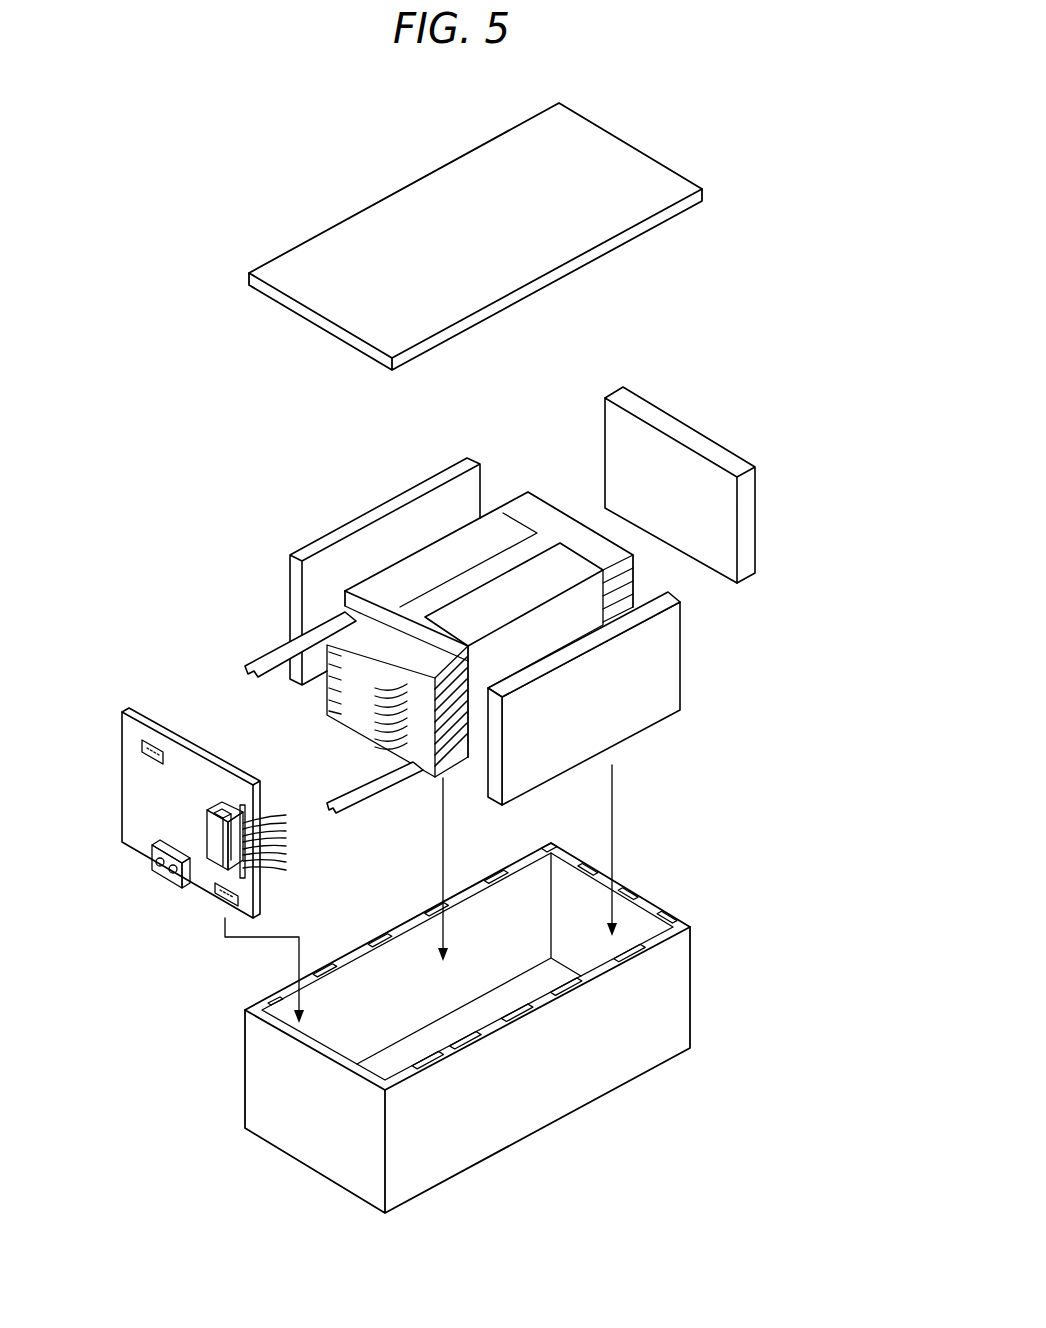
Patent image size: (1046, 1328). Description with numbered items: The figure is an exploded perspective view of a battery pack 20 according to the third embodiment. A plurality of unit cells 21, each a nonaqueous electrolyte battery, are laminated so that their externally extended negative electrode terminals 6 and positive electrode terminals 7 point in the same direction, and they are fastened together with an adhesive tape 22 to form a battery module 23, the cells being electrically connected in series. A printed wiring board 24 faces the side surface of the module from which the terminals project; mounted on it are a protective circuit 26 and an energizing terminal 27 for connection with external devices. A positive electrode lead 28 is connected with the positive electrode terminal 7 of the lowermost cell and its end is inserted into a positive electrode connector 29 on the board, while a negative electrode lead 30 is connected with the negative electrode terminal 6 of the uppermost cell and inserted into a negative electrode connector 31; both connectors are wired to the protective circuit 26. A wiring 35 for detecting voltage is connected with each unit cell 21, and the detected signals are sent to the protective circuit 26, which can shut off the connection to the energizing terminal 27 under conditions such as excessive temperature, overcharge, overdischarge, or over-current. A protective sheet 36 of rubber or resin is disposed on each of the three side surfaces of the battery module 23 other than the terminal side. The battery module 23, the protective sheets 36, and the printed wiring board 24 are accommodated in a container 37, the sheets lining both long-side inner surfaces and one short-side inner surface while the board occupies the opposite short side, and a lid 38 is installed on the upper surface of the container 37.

The battery pack 20 is at (155, 258).
The unit cell 21 is at (633, 606).
The adhesive tape 22 is at (550, 573).
The battery module 23 is at (424, 545).
The printed wiring board 24 is at (152, 712).
The protective circuit 26 is at (217, 803).
The energizing terminal 27 is at (172, 880).
The positive electrode lead 28 is at (367, 806).
The positive electrode connector 29 is at (242, 898).
The negative electrode lead 30 is at (247, 663).
The negative electrode connector 31 is at (160, 750).
The wiring 35 is at (374, 685).
The protective sheet 36 is at (351, 529).
The container 37 is at (680, 994).
The lid 38 is at (645, 175).
The negative electrode terminal 6 is at (340, 613).
The positive electrode terminal 7 is at (407, 670).